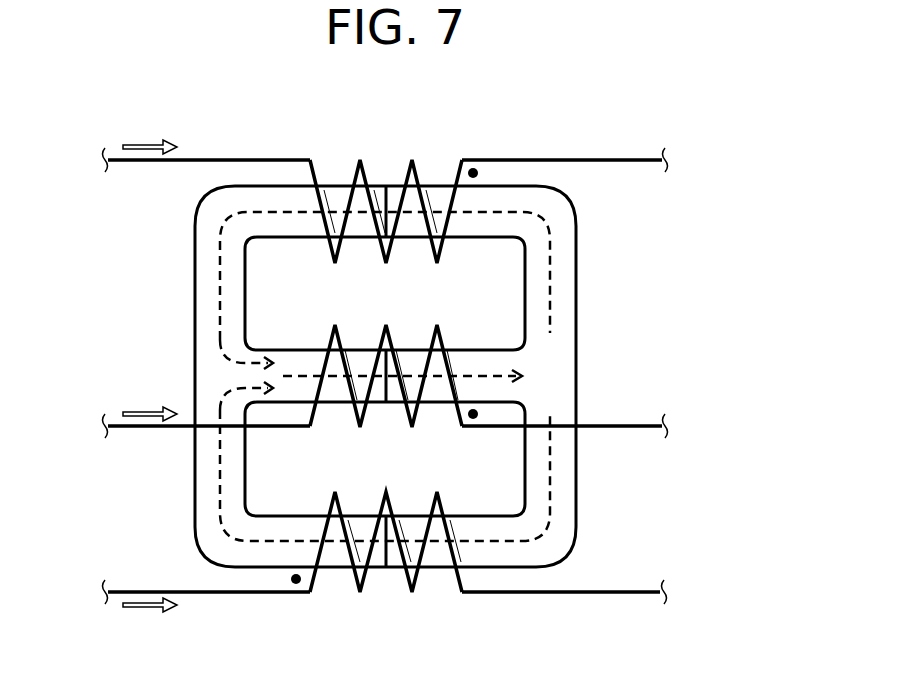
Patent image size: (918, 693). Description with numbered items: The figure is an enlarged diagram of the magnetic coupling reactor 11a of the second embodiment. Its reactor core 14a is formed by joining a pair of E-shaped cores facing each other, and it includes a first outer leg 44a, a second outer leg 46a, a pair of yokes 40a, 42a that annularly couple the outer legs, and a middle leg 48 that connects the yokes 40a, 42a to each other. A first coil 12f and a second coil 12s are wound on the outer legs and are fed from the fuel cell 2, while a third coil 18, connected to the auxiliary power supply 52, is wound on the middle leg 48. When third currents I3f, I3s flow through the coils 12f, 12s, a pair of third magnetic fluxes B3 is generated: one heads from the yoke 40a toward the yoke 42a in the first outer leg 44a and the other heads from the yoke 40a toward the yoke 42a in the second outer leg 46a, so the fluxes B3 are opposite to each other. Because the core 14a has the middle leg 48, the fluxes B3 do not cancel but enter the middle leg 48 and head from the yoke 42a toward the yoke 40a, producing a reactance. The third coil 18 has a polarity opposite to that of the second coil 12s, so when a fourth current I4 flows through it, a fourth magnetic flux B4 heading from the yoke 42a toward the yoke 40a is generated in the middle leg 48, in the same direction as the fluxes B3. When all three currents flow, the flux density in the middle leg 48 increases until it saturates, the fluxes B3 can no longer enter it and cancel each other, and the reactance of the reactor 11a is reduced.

The magnetic coupling reactor 11a is at (667, 236).
The reactor core 14a is at (592, 377).
The yoke 42a is at (208, 460).
The yoke 40a is at (562, 458).
The third coil 18 is at (372, 390).
The third magnetic flux B3 is at (218, 258).
The fourth magnetic flux B4 is at (526, 366).
The fuel cell 2 is at (373, 377).
The auxiliary power supply 52 is at (364, 428).
The first coil 12f is at (348, 196).
The first outer leg 44a is at (437, 196).
The second coil 12s is at (385, 568).
The second outer leg 46a is at (335, 557).
The middle leg 48 is at (466, 364).
The third current I3f is at (136, 146).
The fourth current I4 is at (138, 410).
The third current I3s is at (136, 607).